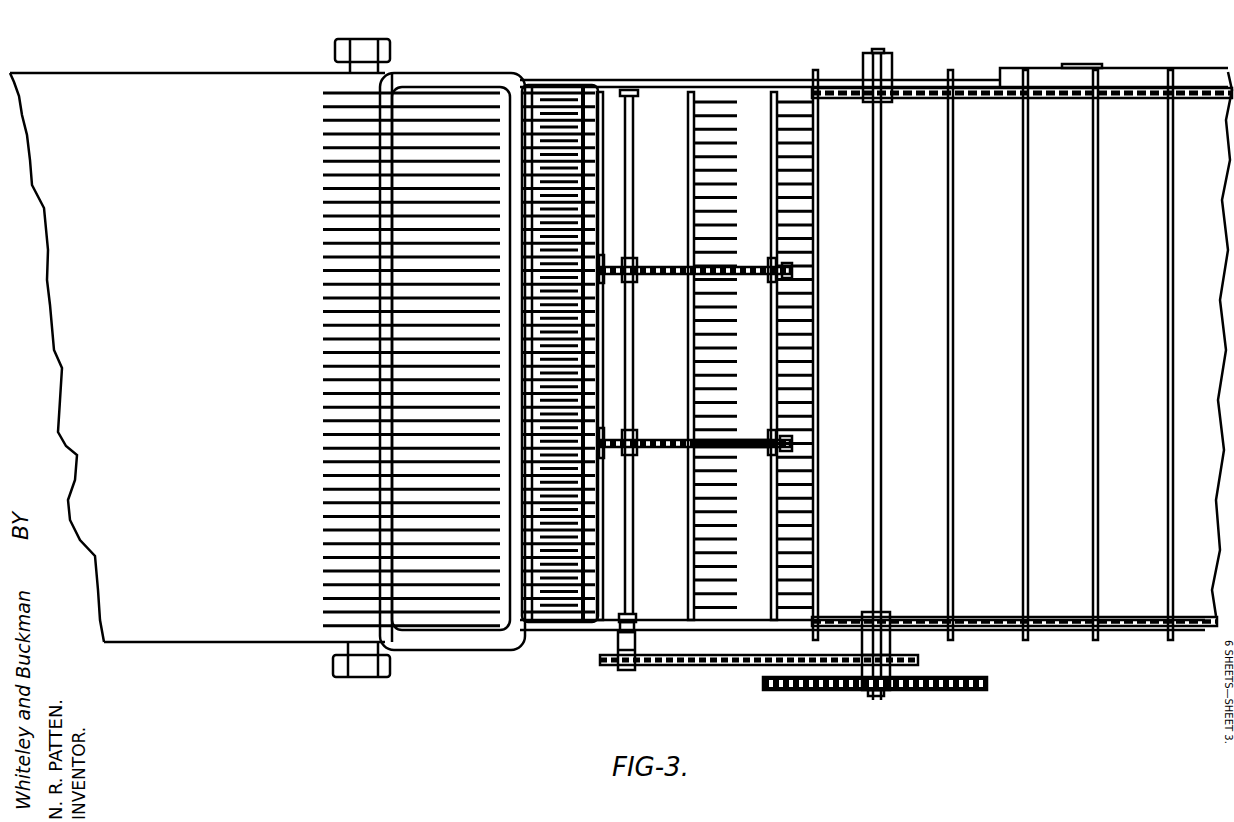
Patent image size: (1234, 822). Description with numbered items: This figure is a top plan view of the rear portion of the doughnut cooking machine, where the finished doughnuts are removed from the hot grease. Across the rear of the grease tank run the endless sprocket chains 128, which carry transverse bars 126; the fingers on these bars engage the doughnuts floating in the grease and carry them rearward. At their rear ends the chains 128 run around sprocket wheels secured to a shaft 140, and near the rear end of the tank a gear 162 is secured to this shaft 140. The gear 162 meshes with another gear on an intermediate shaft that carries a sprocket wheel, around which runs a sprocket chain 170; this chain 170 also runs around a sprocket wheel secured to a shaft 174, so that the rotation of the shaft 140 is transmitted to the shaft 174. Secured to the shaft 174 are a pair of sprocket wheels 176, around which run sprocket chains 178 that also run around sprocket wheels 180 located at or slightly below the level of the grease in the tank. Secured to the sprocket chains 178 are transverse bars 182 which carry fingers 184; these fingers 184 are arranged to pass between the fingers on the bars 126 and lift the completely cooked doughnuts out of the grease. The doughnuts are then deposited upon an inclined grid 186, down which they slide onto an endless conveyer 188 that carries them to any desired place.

The transverse bars 126 is at (1022, 440).
The endless sprocket chains 128 is at (977, 85).
The shaft 140 is at (884, 648).
The gear 162 is at (818, 690).
The sprocket chain 170 is at (723, 665).
The shaft 174 is at (634, 600).
The sprocket wheels 176 is at (640, 262).
The sprocket chains 178 is at (668, 278).
The sprocket wheels 180 is at (770, 262).
The transverse bars 182 is at (605, 138).
The fingers 184 is at (700, 196).
The inclined grid 186 is at (326, 247).
The endless conveyer 188 is at (199, 90).